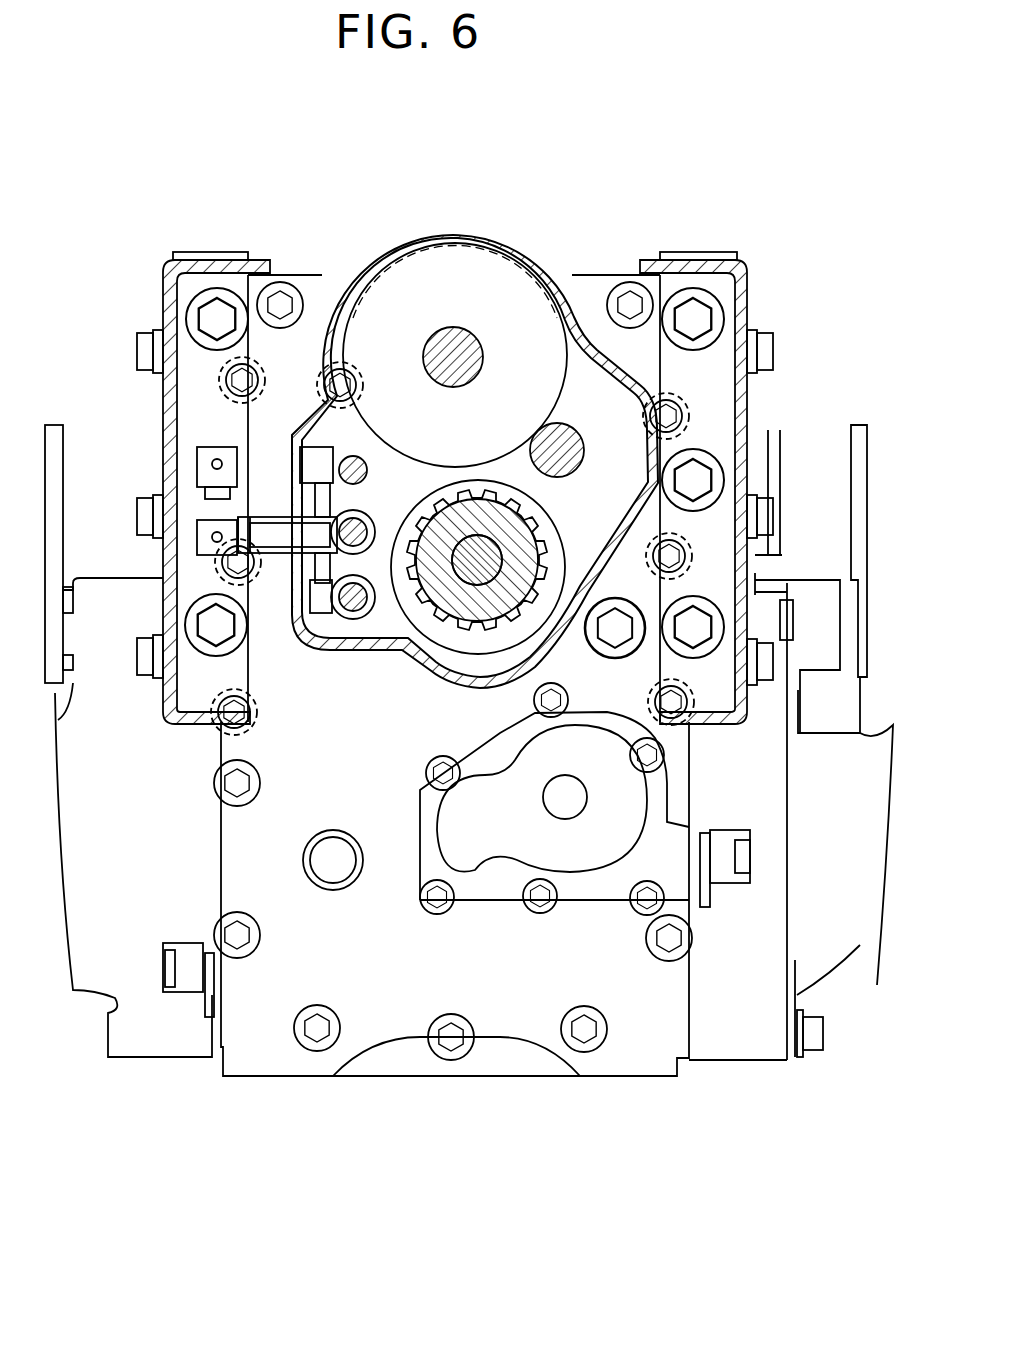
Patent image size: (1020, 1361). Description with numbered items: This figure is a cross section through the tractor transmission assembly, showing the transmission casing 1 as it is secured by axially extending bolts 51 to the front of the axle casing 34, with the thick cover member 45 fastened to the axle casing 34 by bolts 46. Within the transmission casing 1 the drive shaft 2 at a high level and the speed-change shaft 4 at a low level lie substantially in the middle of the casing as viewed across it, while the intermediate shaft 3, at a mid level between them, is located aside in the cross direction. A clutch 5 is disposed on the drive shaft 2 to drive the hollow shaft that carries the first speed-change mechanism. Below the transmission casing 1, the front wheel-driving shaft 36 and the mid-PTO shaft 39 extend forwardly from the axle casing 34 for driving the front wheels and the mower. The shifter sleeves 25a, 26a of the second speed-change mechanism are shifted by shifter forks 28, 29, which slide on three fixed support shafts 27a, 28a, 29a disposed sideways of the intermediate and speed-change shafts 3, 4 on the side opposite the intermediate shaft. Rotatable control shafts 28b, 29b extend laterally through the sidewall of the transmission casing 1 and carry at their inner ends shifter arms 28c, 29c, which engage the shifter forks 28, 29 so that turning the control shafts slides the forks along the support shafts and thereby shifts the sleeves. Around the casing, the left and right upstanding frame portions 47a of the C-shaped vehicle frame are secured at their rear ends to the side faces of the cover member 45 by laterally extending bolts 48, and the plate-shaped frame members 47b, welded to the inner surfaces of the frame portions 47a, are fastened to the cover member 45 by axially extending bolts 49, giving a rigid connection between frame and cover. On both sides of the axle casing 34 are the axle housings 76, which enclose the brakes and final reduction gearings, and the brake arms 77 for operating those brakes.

The transmission casing 1 is at (545, 258).
The drive shaft 2 is at (467, 330).
The intermediate shaft 3 is at (577, 432).
The speed-change shaft 4 is at (418, 660).
The clutch 5 is at (472, 262).
The shifter sleeve 25a is at (540, 540).
The shifter sleeve 26a is at (516, 567).
The support shaft 27a is at (333, 455).
The shifter fork 28 is at (445, 640).
The support shaft 28a is at (356, 620).
The control shaft 28b is at (290, 555).
The shifter arm 28c is at (320, 616).
The shifter fork 29 is at (515, 420).
The support shaft 29a is at (360, 515).
The control shaft 29b is at (355, 456).
The shifter arm 29c is at (290, 462).
The axle casing 34 is at (403, 1067).
The front wheel-driving shaft 36 is at (573, 800).
The mid-PTO shaft 39 is at (327, 873).
The cover member 45 is at (523, 1007).
The bolt 46 is at (630, 300).
The upstanding frame portion 47a is at (165, 428).
The plate-shaped frame member 47b is at (190, 688).
The bolt 48 is at (150, 335).
The bolt 49 is at (214, 312).
The bolt 51 is at (308, 352).
The axle housing 76 is at (143, 1038).
The brake arm 77 is at (53, 423).